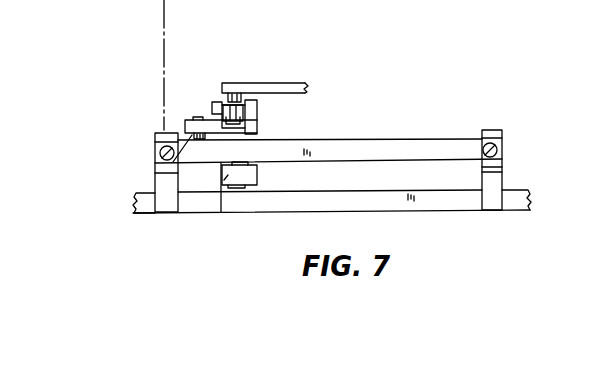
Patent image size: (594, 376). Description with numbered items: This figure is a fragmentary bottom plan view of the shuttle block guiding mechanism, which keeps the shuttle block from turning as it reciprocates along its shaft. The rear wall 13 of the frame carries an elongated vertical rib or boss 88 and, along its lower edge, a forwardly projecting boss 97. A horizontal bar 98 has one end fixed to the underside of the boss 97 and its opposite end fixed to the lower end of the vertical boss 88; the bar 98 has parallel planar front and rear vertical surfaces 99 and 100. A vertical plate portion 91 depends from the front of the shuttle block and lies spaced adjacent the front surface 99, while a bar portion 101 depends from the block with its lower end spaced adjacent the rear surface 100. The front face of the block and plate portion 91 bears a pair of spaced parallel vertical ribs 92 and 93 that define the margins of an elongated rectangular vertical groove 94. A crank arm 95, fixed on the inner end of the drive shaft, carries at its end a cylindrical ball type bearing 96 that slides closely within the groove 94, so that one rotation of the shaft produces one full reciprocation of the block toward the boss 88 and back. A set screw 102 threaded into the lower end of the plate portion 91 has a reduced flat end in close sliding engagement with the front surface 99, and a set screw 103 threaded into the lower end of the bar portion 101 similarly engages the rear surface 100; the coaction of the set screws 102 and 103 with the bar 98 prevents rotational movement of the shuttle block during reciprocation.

The rear wall 13 is at (525, 190).
The vertical rib or boss 88 is at (493, 130).
The vertical plate portion 91 is at (185, 128).
The vertical rib 92 is at (247, 103).
The vertical rib 93 is at (213, 102).
The vertical groove 94 is at (257, 124).
The crank arm 95 is at (297, 82).
The ball type bearing 96 is at (215, 110).
The forwardly projecting boss 97 is at (155, 185).
The horizontal bar 98 is at (433, 148).
The front vertical surface 99 is at (360, 140).
The rear vertical surface 100 is at (378, 161).
The bar portion 101 is at (221, 212).
The set screw 102 is at (157, 166).
The set screw 103 is at (256, 168).